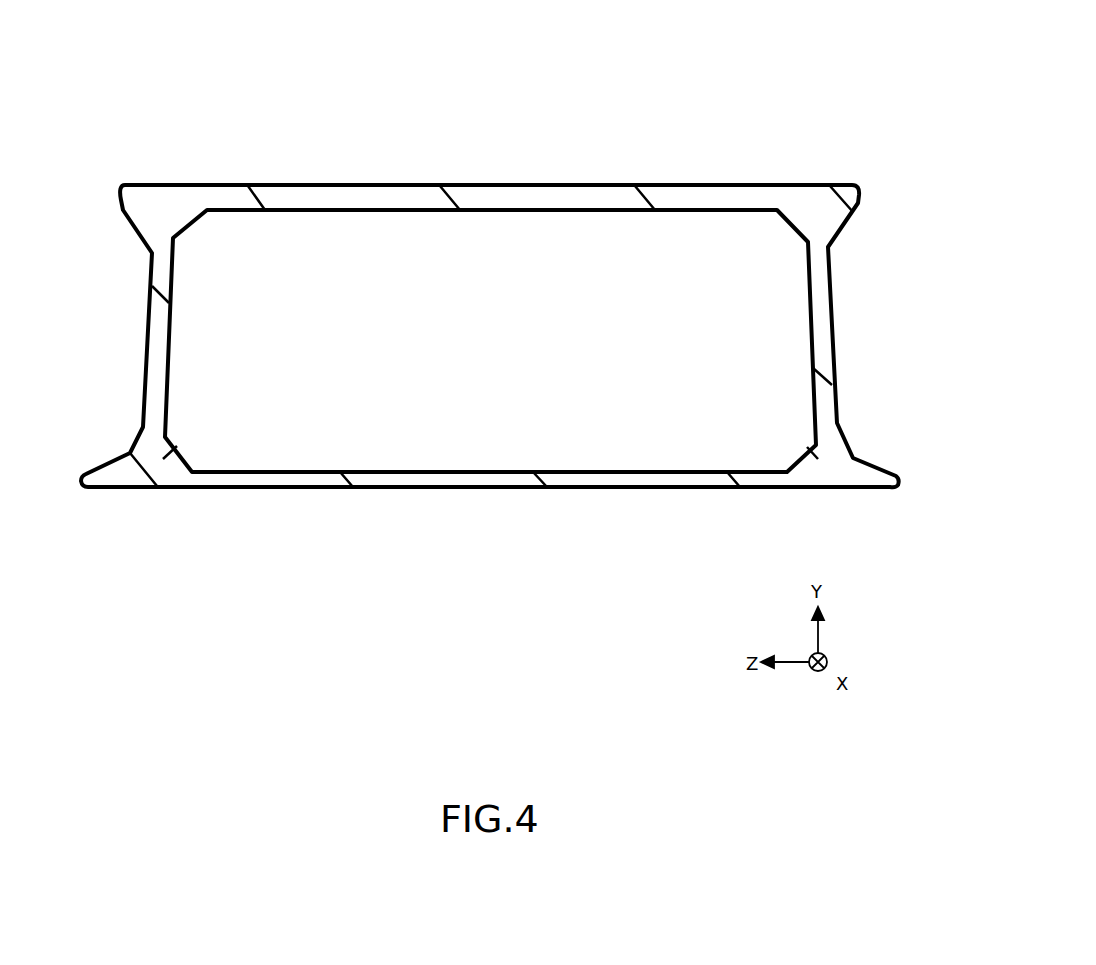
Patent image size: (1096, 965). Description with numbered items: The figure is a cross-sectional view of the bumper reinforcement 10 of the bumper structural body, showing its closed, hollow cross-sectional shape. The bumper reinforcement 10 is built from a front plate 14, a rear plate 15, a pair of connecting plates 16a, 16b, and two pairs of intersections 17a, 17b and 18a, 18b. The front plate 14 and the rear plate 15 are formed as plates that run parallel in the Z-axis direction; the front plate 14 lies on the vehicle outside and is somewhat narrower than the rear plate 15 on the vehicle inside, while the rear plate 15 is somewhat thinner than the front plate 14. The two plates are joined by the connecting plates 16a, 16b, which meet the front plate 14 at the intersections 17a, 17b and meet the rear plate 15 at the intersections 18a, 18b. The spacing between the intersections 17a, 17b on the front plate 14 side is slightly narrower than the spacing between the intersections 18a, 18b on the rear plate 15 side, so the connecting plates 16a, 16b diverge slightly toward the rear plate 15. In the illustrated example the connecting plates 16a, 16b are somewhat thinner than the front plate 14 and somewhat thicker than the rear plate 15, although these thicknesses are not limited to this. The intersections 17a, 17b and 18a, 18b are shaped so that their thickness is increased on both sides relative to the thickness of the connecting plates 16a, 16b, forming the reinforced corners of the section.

The bumper reinforcement 10 is at (690, 86).
The front plate 14 is at (362, 193).
The rear plate 15 is at (415, 473).
The connecting plate 16a is at (163, 325).
The connecting plate 16b is at (818, 325).
The intersection 17a is at (170, 220).
The intersection 17b is at (810, 220).
The intersection 18a is at (170, 443).
The intersection 18b is at (813, 447).